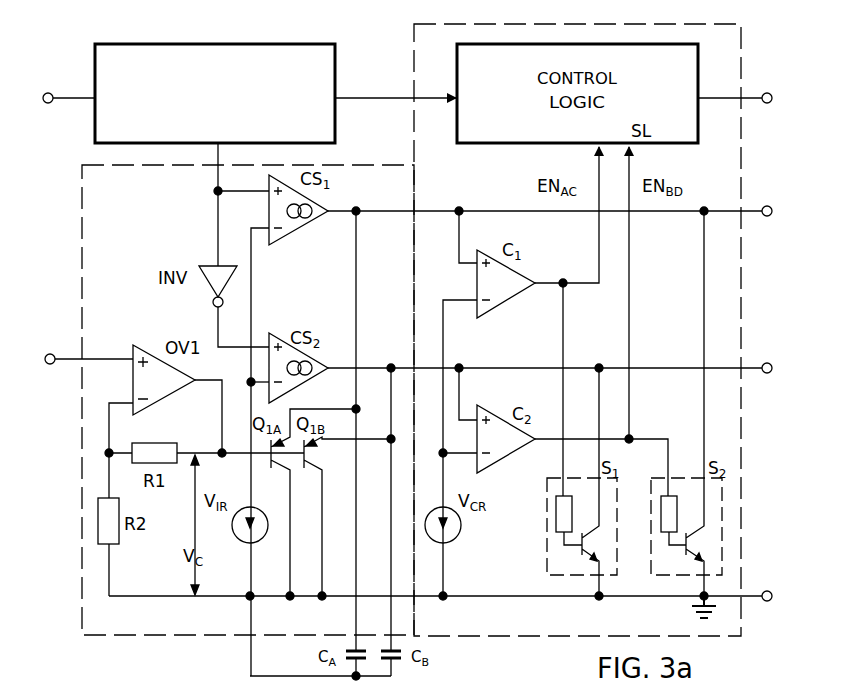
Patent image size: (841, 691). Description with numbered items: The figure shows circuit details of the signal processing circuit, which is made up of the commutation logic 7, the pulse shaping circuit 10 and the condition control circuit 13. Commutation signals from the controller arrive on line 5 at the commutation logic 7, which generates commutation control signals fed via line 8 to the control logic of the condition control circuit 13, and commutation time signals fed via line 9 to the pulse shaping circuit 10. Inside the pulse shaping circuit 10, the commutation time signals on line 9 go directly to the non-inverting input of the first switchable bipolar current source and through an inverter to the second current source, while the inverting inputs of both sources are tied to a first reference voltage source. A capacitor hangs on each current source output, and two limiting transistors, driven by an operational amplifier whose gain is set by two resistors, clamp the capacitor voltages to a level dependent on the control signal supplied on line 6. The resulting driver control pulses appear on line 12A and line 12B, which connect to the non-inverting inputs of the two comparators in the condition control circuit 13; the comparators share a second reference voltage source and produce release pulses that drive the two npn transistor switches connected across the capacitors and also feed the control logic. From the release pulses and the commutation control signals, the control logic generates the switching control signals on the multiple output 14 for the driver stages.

The line 5 is at (56, 93).
The line 6 is at (90, 359).
The commutation logic 7 is at (283, 44).
The line 8 is at (352, 98).
The line 9 is at (215, 209).
The pulse shaping circuit 10 is at (350, 165).
The line 12A is at (462, 208).
The line 12B is at (462, 365).
The condition control circuit 13 is at (667, 24).
The multiple output 14 is at (706, 98).